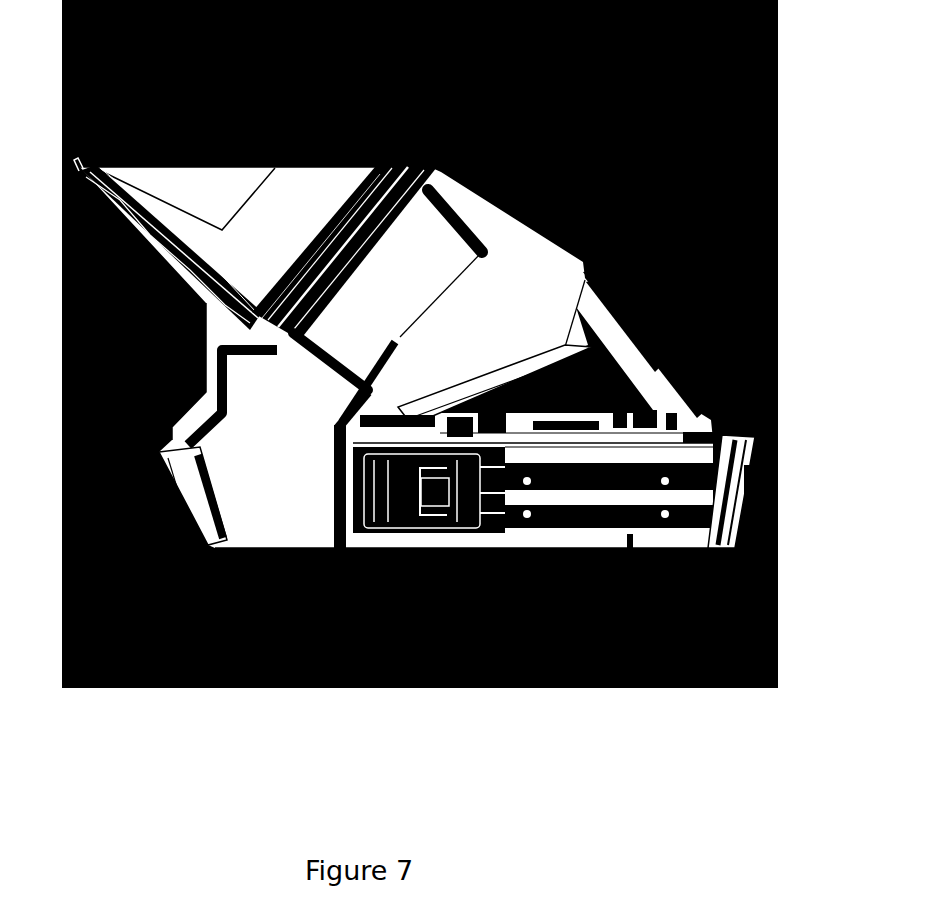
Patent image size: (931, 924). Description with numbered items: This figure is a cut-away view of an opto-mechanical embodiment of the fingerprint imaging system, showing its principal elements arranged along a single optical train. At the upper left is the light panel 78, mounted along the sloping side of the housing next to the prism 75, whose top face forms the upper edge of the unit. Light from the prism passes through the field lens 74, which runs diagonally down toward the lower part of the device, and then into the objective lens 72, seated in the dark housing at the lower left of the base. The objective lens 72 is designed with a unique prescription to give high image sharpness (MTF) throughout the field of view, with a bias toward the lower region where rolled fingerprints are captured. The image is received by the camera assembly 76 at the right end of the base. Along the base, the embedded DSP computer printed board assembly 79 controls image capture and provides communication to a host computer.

The objective lens 72 is at (380, 546).
The field lens 74 is at (432, 210).
The prism 75 is at (255, 132).
The camera assembly 76 is at (704, 530).
The light panel 78 is at (144, 206).
The embedded DSP computer printed board assembly 79 is at (520, 386).